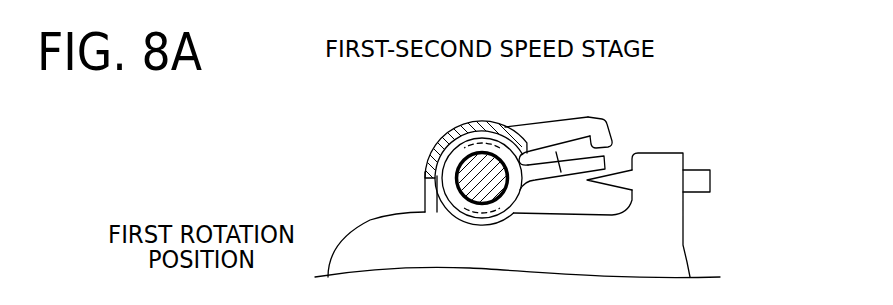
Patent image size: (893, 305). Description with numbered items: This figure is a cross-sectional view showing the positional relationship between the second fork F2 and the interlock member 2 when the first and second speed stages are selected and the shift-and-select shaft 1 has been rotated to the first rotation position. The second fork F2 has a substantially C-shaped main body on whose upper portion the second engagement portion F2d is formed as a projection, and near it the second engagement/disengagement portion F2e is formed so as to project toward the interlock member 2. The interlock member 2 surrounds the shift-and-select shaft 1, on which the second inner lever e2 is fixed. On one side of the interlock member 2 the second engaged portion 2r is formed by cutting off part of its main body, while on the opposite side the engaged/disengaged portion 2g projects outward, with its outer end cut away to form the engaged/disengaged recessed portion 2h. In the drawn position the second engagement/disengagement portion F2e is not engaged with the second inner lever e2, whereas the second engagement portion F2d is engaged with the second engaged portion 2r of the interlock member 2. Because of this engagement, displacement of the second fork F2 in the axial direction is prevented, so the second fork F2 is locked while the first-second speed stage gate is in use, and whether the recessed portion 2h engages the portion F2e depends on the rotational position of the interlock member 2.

The shift-and-select shaft 1 is at (507, 127).
The interlock member 2 is at (462, 103).
The second engaged portion 2r is at (425, 170).
The engaged/disengaged portion 2g is at (569, 122).
The engaged/disengaged recessed portion 2h is at (596, 121).
The second inner lever e2 is at (556, 152).
The second fork F2 is at (333, 221).
The second engagement portion F2d is at (424, 186).
The second engagement/disengagement portion F2e is at (610, 180).